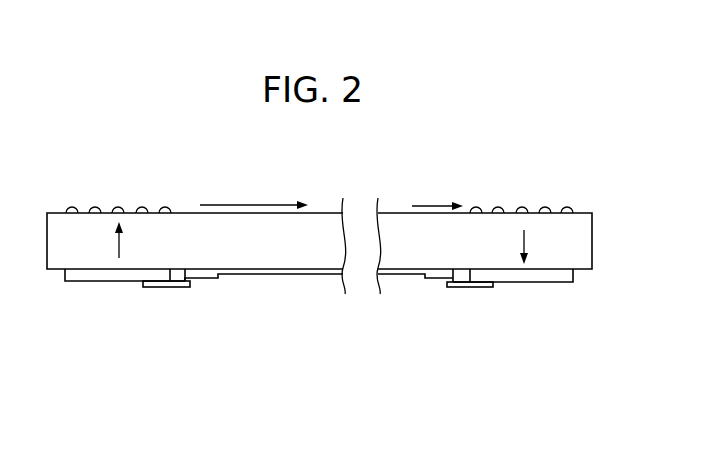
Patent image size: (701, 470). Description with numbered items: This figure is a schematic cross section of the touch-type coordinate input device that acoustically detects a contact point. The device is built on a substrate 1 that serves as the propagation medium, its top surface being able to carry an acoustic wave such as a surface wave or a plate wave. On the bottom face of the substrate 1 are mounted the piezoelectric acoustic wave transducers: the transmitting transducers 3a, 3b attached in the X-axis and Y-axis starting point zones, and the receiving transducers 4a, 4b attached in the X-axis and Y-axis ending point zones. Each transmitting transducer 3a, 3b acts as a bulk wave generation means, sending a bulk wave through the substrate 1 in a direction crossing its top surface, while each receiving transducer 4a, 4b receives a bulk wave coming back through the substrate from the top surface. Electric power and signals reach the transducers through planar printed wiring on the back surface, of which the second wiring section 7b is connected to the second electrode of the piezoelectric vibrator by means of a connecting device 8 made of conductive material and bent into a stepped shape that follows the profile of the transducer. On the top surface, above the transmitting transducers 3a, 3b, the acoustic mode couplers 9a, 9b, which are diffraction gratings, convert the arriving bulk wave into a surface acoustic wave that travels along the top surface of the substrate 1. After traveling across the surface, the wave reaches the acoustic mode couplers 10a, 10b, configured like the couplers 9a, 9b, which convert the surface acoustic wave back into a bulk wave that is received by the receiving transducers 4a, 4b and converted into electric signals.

The substrate 1 is at (284, 257).
The transmitting transducer 3a is at (118, 304).
The transmitting transducer 3b is at (80, 275).
The receiving transducer 4a is at (519, 305).
The receiving transducer 4b is at (545, 285).
The second wiring section 7b is at (230, 280).
The connecting device 8 is at (168, 283).
The acoustic mode coupler 9a is at (112, 171).
The acoustic mode coupler 9b is at (86, 196).
The acoustic mode coupler 10a is at (532, 167).
The acoustic mode coupler 10b is at (523, 191).